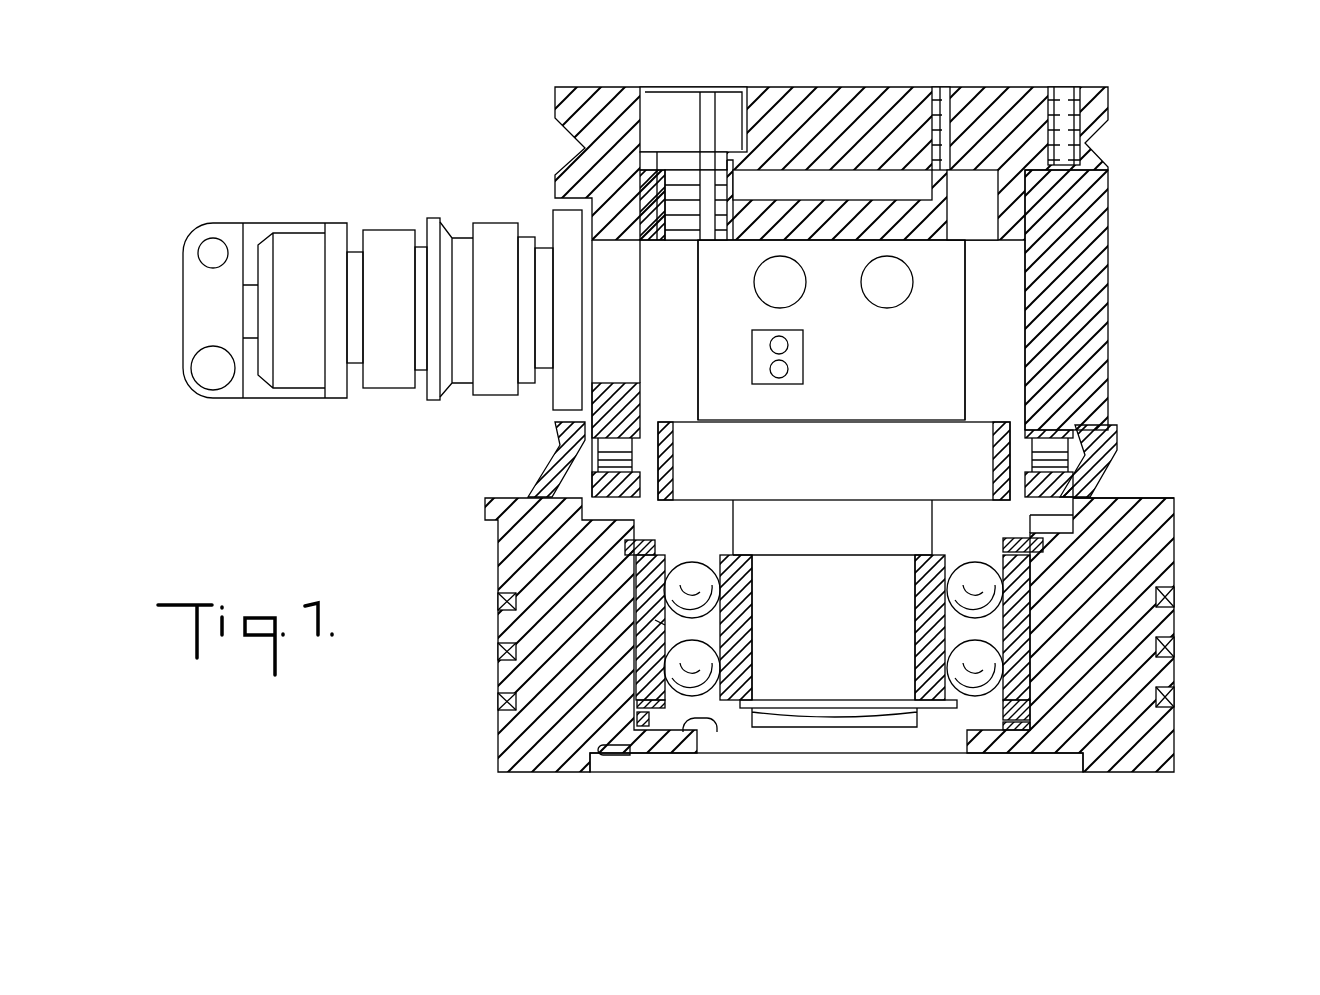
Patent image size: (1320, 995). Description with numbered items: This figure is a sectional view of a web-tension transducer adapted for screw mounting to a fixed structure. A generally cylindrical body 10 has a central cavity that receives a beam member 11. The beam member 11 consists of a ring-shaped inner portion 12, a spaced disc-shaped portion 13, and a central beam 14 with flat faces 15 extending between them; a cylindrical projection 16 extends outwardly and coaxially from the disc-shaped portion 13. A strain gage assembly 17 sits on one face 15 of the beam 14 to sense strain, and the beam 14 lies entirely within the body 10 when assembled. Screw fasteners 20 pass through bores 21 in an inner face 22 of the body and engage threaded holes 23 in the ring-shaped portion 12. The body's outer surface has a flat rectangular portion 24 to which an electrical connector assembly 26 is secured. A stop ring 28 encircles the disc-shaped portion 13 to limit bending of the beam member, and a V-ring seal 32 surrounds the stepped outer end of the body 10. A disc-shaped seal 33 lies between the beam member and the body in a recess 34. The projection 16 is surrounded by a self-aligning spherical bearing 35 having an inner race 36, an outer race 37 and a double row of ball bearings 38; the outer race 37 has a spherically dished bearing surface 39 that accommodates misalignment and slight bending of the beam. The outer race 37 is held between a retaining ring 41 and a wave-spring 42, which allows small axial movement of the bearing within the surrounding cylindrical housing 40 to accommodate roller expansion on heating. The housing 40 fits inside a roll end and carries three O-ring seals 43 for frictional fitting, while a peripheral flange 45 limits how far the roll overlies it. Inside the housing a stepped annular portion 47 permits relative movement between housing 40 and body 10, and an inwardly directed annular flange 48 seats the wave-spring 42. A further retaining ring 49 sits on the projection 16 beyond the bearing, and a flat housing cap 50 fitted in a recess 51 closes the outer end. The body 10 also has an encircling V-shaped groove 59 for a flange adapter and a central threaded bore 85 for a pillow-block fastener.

The body 10 is at (836, 279).
The beam member 11 is at (1008, 250).
The ring-shaped inner portion 12 is at (1025, 205).
The disc-shaped portion 13 is at (975, 432).
The central beam 14 is at (970, 347).
The flat faces 15 is at (938, 368).
The cylindrical projection 16 is at (768, 565).
The strain gage assembly 17 is at (813, 360).
The screw fasteners 20 is at (658, 84).
The bores 21 is at (736, 92).
The inner face 22 is at (1003, 90).
The threaded holes 23 is at (640, 185).
The flat rectangular portion 24 is at (556, 226).
The electrical connector assembly 26 is at (355, 217).
The stop ring 28 is at (995, 498).
The resilient seal member 32 is at (548, 447).
The disc-shaped seal 33 is at (872, 192).
The recess 34 is at (738, 175).
The spherical bearing 35 is at (834, 659).
The inner race 36 is at (740, 598).
The outer race 37 is at (640, 602).
The ball bearings 38 is at (960, 660).
The bearing surface 39 is at (655, 625).
The housing 40 is at (889, 624).
The retaining ring 41 is at (1025, 545).
The wave-spring 42 is at (1012, 710).
The O-ring seals 43 is at (1174, 598).
The peripheral flange 45 is at (1177, 492).
The stepped annular portion 47 is at (1100, 495).
The annular flange 48 is at (717, 732).
The retaining ring 49 is at (940, 708).
The housing cap 50 is at (997, 772).
The recess 51 is at (627, 755).
The V-shaped groove 59 is at (1115, 132).
The central threaded bore 85 is at (885, 87).